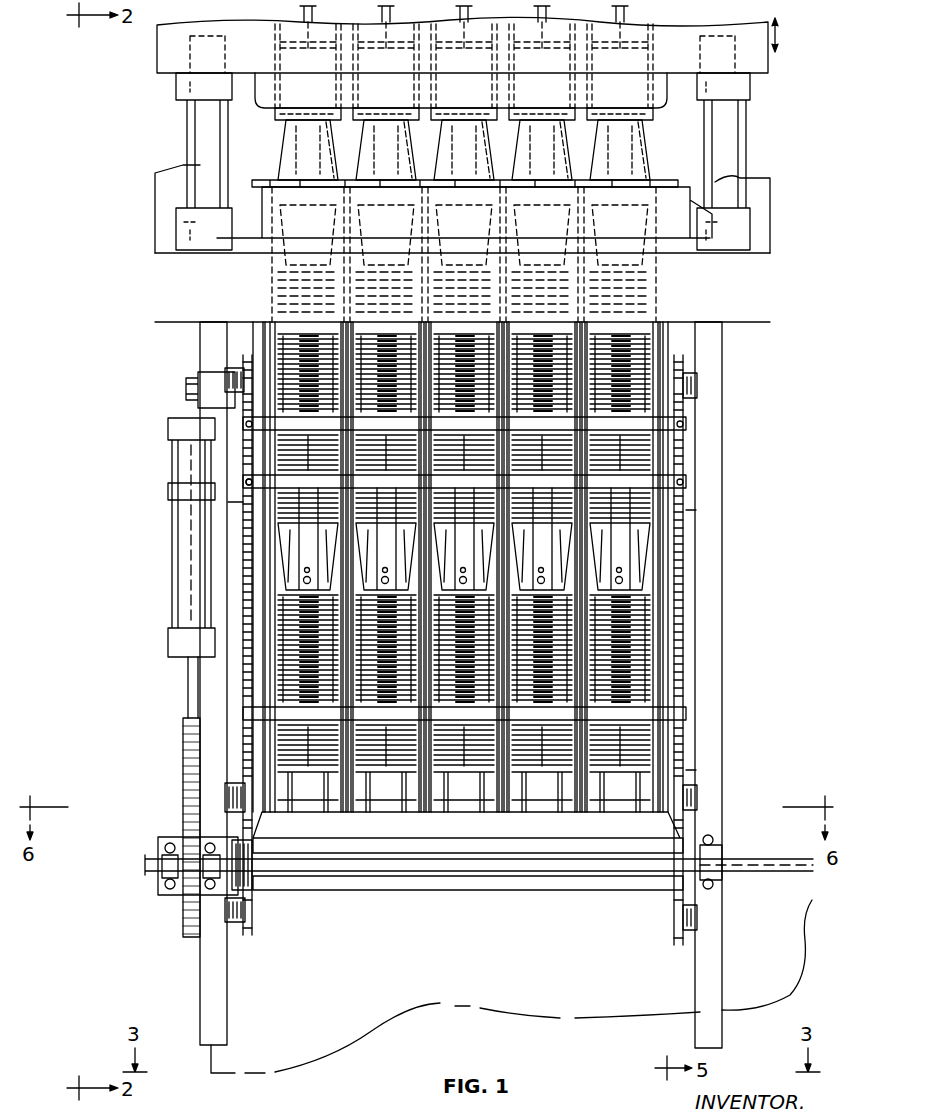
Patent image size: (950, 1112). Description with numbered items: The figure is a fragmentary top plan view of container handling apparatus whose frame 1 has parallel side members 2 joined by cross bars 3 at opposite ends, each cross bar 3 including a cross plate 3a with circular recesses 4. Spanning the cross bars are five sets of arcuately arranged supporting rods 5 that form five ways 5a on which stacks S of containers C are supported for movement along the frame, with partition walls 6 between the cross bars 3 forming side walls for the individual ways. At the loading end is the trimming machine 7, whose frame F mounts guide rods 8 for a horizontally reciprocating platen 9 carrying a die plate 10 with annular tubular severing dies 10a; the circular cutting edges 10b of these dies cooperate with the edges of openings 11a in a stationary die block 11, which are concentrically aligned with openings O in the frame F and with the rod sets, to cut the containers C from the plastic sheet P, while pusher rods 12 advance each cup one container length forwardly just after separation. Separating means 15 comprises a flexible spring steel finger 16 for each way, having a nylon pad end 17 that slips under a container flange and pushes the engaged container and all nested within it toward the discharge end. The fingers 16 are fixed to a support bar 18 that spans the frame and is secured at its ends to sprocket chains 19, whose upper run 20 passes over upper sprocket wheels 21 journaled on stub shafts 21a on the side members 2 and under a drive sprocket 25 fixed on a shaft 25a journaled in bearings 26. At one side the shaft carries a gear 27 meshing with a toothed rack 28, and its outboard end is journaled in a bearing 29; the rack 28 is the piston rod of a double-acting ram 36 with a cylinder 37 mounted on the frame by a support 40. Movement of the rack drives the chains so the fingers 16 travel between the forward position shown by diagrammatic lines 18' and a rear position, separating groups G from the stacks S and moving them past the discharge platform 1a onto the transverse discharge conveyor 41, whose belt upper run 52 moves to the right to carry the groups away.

The frame 1 is at (740, 352).
The discharge platform 1a is at (340, 900).
The side members 2 is at (200, 346).
The cross bars 3 is at (228, 504).
The cross plate 3a is at (496, 814).
The circular recesses 4 is at (630, 816).
The supporting rods 5 is at (672, 344).
The ways 5a is at (372, 830).
The partition walls 6 is at (674, 692).
The trimming machine 7 is at (768, 300).
The guide rods 8 is at (190, 134).
The reciprocating platen 9 is at (752, 68).
The die plate 10 is at (662, 104).
The severing dies 10a is at (276, 114).
The circular cutting edges 10b is at (278, 130).
The stationary die block 11 is at (258, 210).
The openings 11a is at (276, 224).
The pusher rods 12 is at (528, 48).
The separating means 15 is at (240, 476).
The spring steel finger 16 is at (680, 496).
The nylon pad end 17 is at (664, 586).
The support bar 18 is at (532, 430).
The forward diagrammatic lines 18' is at (521, 689).
The sprocket chains 19 is at (692, 556).
The upper run 20 is at (243, 598).
The upper sprocket wheels 21 is at (230, 372).
The stub shafts 21a is at (698, 392).
The drive sprocket 25 is at (248, 890).
The shaft 25a is at (146, 866).
The bearings 26 is at (168, 846).
The gear 27 is at (176, 894).
The toothed rack 28 is at (188, 742).
The bearing 29 is at (724, 866).
The double-acting ram 36 is at (190, 688).
The cylinder 37 is at (185, 568).
The support 40 is at (216, 396).
The discharge conveyor 41 is at (442, 1003).
The upper run 52 is at (522, 977).
The containers C is at (644, 146).
The frame F is at (760, 222).
The groups G is at (654, 616).
The openings O is at (662, 300).
The plastic sheet P is at (660, 182).
The stacks S is at (682, 452).